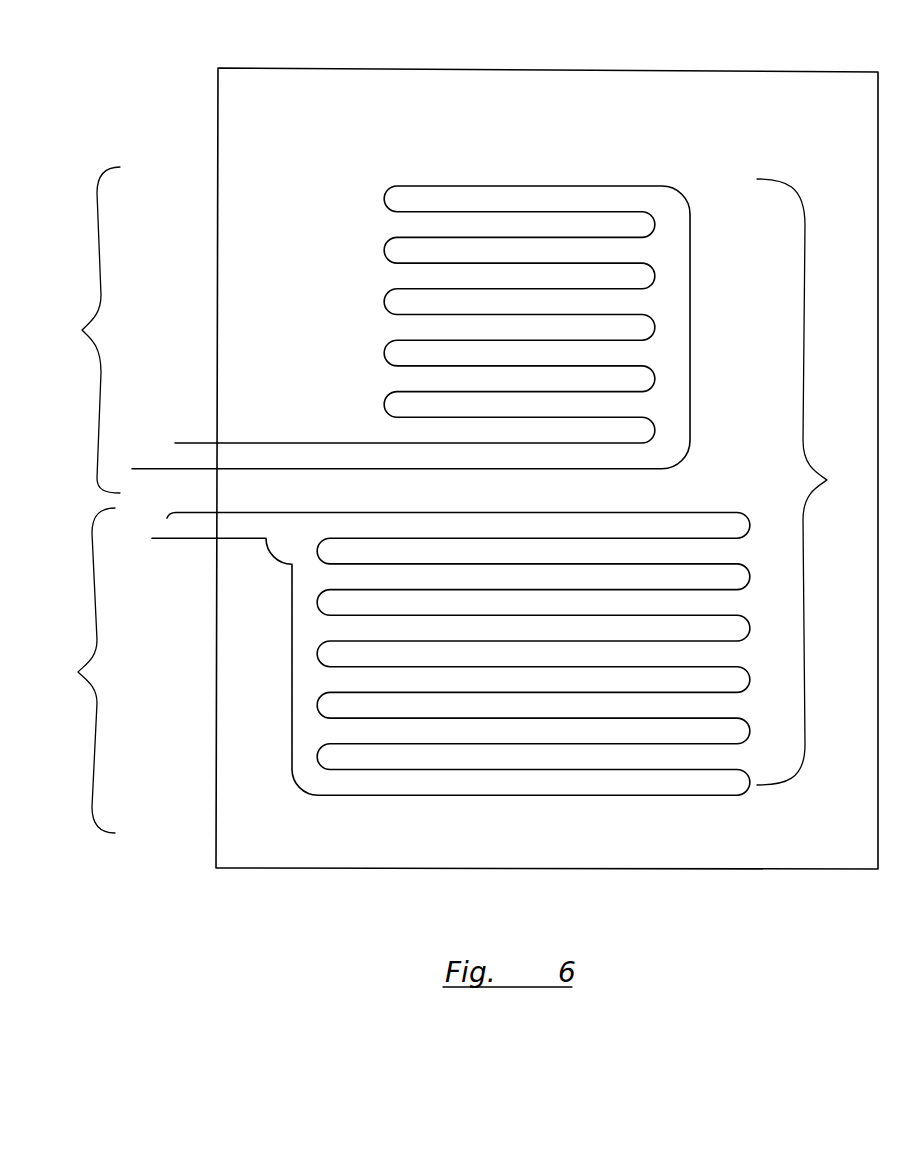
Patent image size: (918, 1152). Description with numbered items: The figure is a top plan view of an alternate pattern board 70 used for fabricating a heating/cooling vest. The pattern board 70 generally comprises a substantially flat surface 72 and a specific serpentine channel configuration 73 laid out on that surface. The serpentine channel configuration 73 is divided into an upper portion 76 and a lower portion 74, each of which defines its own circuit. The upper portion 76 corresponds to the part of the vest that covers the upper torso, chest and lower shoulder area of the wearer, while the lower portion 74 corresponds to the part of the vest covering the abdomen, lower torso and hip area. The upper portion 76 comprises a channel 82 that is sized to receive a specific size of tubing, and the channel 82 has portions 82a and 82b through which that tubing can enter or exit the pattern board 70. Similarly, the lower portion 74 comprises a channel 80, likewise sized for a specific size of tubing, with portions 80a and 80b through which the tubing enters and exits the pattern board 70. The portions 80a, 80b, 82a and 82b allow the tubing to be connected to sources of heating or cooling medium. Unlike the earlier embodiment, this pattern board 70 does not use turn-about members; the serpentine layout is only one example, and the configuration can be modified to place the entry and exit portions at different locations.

The pattern board 70 is at (616, 72).
The substantially flat surface 72 is at (835, 90).
The serpentine channel configuration 73 is at (811, 482).
The lower portion 74 is at (395, 685).
The upper portion 76 is at (366, 318).
The channel 80 is at (491, 795).
The portion of channel 80 80a is at (195, 538).
The portion of channel 80 80b is at (170, 515).
The channel 82 is at (509, 186).
The portion of channel 82 82a is at (150, 467).
The portion of channel 82 82b is at (201, 441).